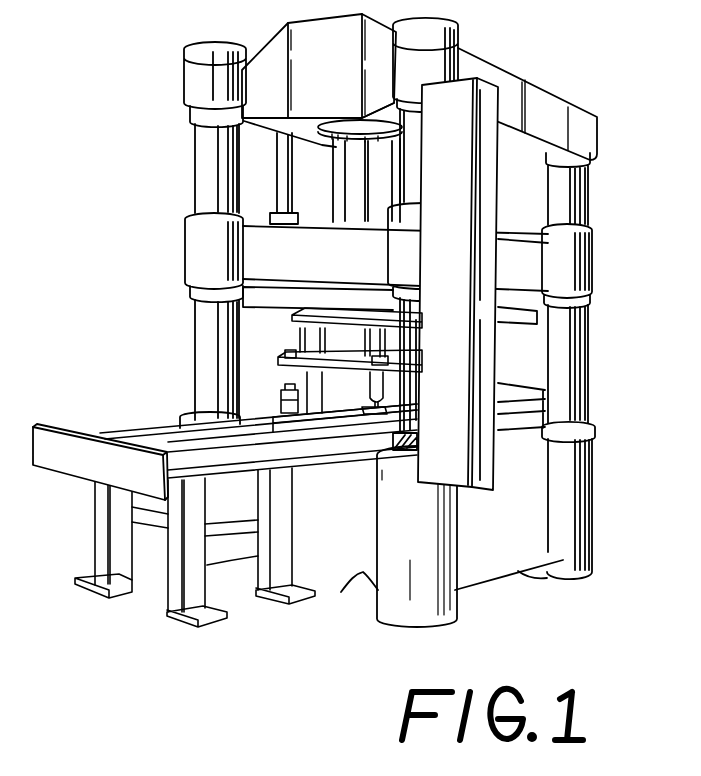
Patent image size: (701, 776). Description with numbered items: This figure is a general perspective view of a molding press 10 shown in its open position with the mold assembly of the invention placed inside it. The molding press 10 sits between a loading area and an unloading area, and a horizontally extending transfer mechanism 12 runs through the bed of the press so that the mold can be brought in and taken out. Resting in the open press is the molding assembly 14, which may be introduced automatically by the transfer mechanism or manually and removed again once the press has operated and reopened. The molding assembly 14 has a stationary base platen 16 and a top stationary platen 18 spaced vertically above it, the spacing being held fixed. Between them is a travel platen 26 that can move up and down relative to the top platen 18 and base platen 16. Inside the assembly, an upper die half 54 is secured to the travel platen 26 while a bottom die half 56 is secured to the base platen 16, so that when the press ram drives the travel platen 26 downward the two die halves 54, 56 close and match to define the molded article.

The molding press 10 is at (590, 267).
The transfer mechanism 12 is at (72, 467).
The molding assembly 14 is at (322, 371).
The base platen 16 is at (325, 425).
The top stationary platen 18 is at (308, 313).
The travel platen 26 is at (358, 380).
The upper die half 54 is at (283, 394).
The bottom die half 56 is at (327, 407).